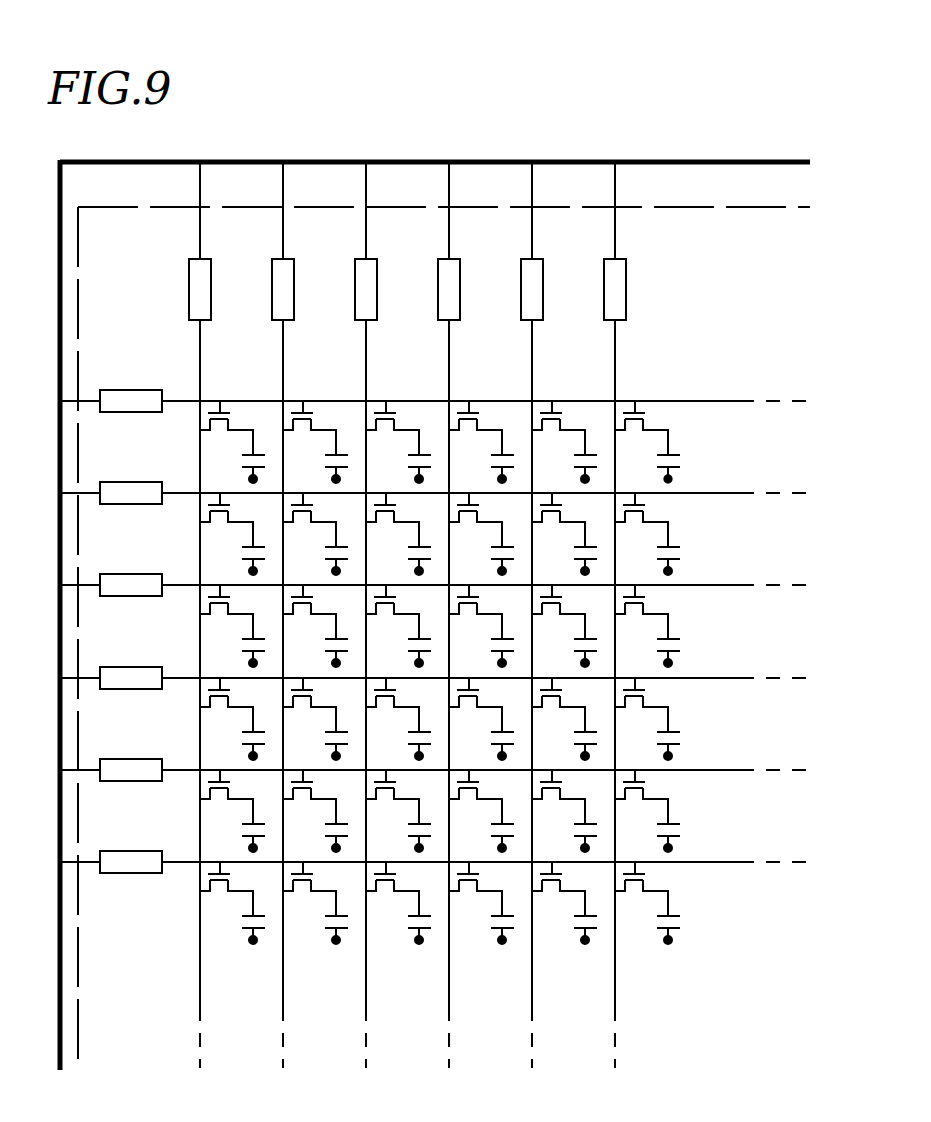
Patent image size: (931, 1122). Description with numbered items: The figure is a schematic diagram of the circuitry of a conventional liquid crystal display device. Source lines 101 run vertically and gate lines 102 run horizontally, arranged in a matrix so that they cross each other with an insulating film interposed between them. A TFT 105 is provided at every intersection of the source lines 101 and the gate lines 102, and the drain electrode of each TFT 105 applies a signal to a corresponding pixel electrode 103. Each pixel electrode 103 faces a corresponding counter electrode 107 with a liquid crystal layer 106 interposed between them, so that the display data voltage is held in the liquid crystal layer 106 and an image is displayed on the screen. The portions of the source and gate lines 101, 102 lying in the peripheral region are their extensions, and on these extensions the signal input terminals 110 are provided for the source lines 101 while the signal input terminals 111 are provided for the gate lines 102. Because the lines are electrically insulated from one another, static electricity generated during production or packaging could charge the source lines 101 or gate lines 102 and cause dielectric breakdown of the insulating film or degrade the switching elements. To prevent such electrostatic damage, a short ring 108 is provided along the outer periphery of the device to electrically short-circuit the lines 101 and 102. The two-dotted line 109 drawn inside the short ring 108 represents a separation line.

The source line 101 is at (615, 350).
The gate line 102 is at (702, 400).
The pixel electrode 103 is at (678, 454).
The TFT 105 is at (650, 413).
The liquid crystal layer 106 is at (678, 467).
The counter electrode 107 is at (672, 466).
The short ring 108 is at (395, 161).
The separation line 109 is at (78, 935).
The signal input terminal 110 is at (627, 278).
The signal input terminal 111 is at (132, 390).